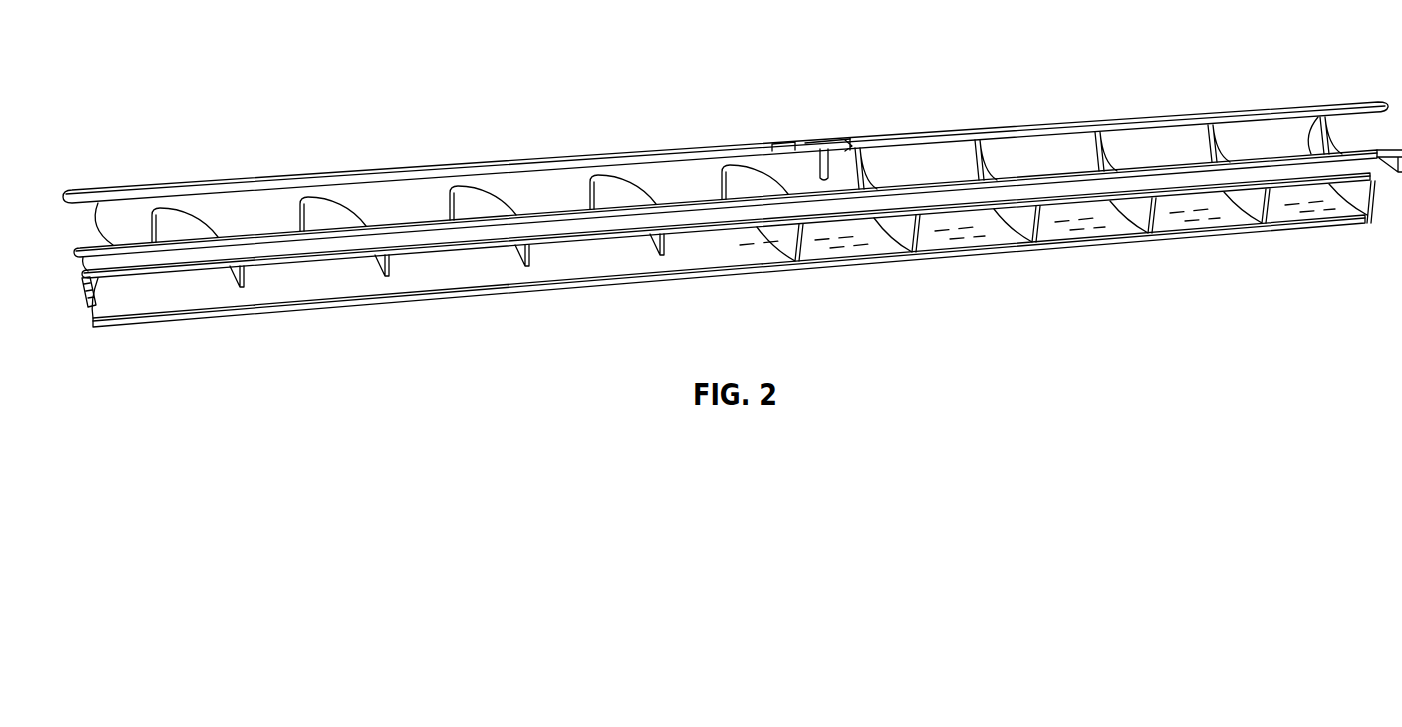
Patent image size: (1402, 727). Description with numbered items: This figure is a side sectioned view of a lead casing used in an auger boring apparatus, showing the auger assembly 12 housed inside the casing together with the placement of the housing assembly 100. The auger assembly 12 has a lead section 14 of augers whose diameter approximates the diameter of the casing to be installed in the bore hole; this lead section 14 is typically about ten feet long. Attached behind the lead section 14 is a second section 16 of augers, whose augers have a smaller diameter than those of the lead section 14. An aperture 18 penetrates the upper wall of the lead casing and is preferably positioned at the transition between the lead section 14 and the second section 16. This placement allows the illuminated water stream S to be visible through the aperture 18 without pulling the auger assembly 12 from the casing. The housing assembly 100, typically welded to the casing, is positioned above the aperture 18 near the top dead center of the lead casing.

The housing assembly 100 is at (852, 125).
The auger assembly 12 is at (617, 222).
The lead section 14 is at (910, 257).
The second section 16 is at (150, 182).
The aperture 18 is at (845, 124).
The illuminated water stream S is at (824, 157).